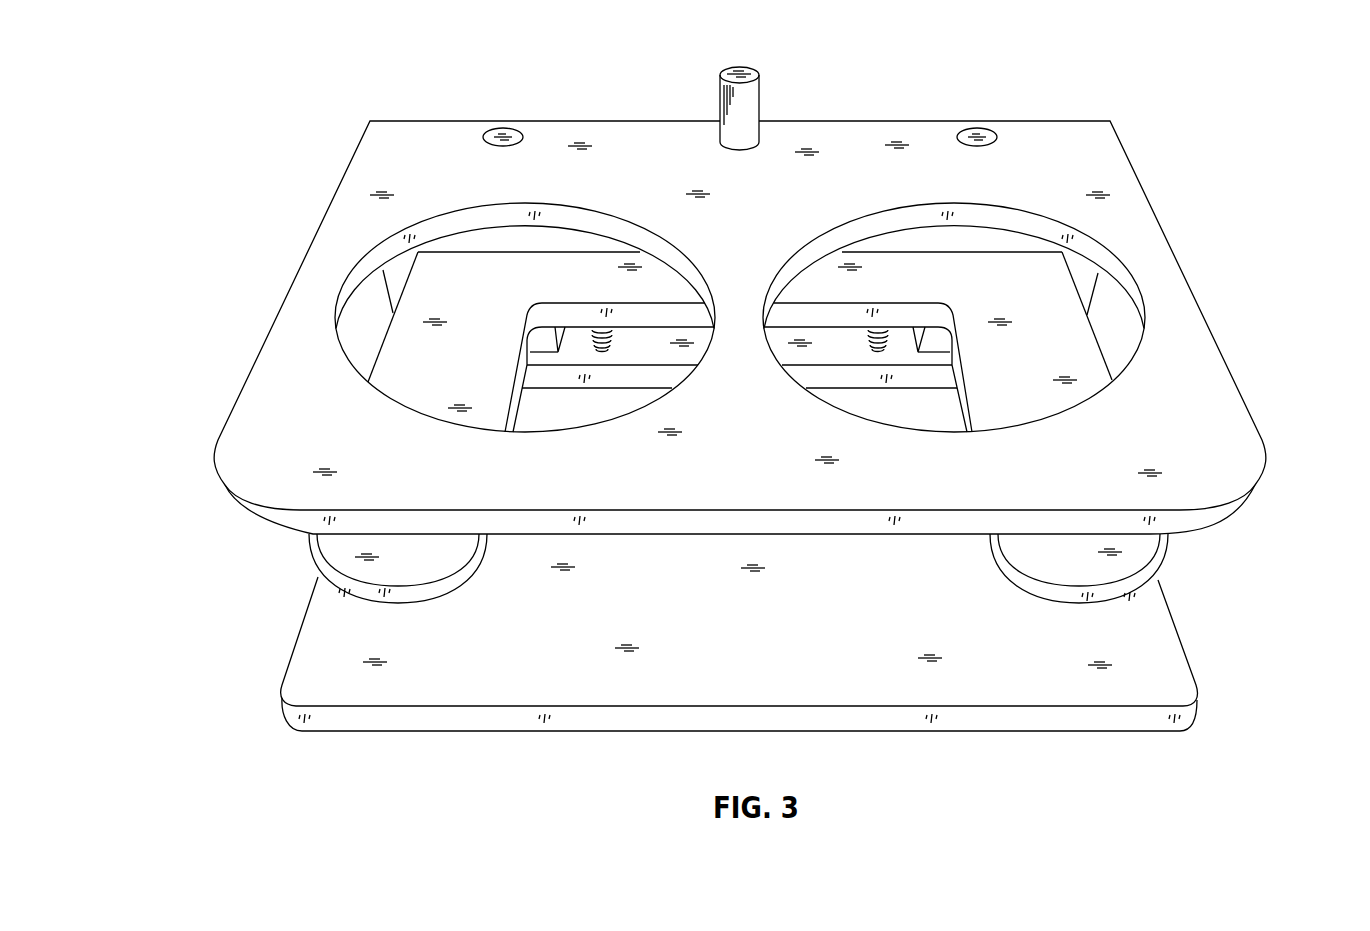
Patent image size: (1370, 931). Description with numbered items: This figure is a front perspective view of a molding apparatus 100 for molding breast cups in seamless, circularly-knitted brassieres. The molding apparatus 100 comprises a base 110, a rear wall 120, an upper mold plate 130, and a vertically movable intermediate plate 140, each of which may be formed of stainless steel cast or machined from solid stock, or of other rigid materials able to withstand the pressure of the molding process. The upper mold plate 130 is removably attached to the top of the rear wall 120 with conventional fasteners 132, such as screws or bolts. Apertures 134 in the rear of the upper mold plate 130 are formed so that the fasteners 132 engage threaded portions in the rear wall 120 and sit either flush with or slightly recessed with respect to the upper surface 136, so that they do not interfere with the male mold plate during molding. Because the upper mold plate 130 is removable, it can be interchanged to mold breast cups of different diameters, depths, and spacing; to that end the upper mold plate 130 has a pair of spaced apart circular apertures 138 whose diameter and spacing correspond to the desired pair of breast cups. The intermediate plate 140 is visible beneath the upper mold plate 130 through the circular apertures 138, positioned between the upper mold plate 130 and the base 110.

The molding apparatus 100 is at (1222, 128).
The base 110 is at (1185, 712).
The rear wall 120 is at (970, 240).
The upper mold plate 130 is at (257, 512).
The fasteners 132 is at (510, 130).
The apertures 134 is at (483, 146).
The upper surface 136 is at (1213, 348).
The circular apertures 138 is at (350, 370).
The intermediate plate 140 is at (440, 292).